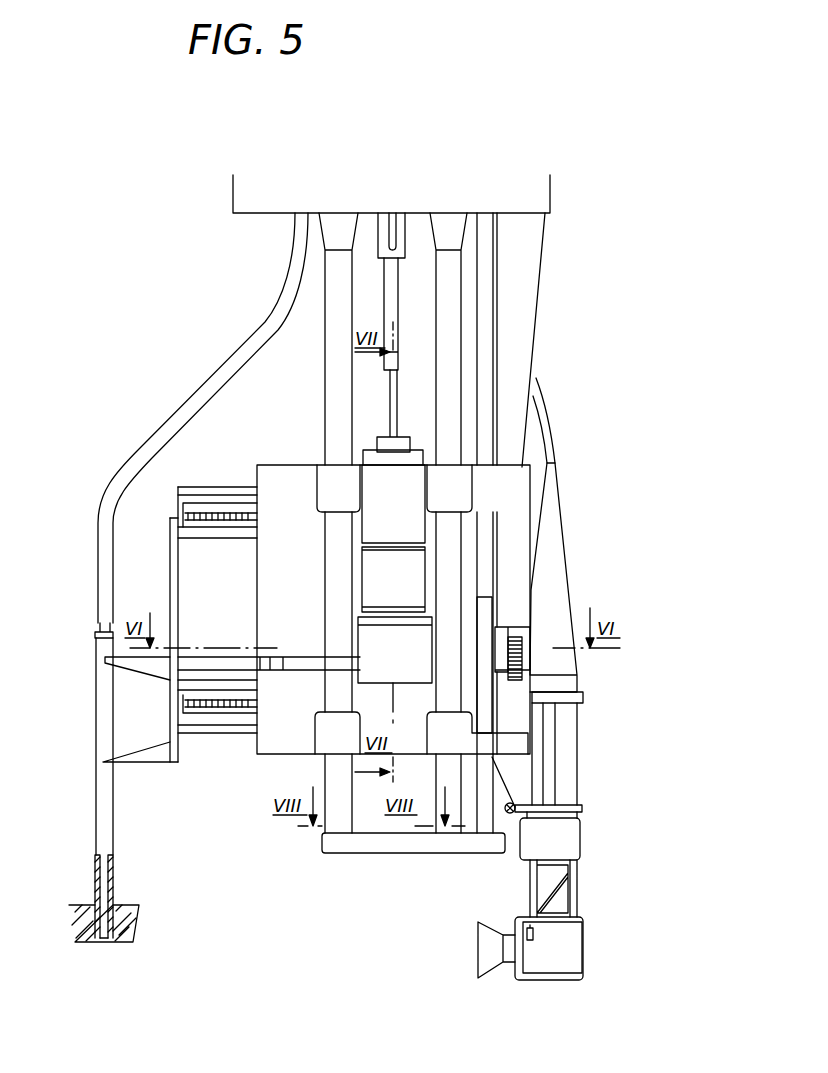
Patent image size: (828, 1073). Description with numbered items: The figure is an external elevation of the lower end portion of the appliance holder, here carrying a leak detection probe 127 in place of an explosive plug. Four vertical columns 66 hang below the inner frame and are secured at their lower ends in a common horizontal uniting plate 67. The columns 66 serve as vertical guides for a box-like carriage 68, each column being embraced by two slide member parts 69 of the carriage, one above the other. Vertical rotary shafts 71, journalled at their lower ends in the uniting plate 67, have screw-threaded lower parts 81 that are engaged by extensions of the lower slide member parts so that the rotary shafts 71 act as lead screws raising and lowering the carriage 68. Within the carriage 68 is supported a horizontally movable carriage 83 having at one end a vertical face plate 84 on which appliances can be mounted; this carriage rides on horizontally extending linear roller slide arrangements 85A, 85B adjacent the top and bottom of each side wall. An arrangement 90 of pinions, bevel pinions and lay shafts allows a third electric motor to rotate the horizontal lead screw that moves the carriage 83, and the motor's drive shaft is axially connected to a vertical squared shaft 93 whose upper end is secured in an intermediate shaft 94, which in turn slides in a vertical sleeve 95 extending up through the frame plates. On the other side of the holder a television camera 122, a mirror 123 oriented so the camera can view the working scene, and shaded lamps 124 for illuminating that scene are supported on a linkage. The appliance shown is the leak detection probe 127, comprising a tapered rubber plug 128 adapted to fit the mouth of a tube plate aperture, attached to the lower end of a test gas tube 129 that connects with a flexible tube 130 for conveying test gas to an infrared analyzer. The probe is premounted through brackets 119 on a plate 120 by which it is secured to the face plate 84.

The column 66 is at (337, 340).
The uniting plate 67 is at (377, 843).
The carriage 68 is at (272, 475).
The slide member part 69 is at (330, 492).
The rotary shaft 71 is at (487, 582).
The lower part of rotary shaft 81 is at (485, 615).
The horizontally movable carriage 83 is at (230, 532).
The face plate 84 is at (187, 563).
The upper linear roller slide arrangement 85A is at (202, 522).
The lower linear roller slide arrangement 85B is at (208, 708).
The arrangement of pinions, bevel pinions and lay shafts 90 is at (373, 562).
The vertical squared shaft 93 is at (392, 405).
The intermediate shaft 94 is at (390, 303).
The vertical sleeve 95 is at (398, 220).
The bracket 119 is at (157, 667).
The plate 120 is at (170, 608).
The television camera 122 is at (563, 755).
The mirror 123 is at (557, 893).
The shaded lamp 124 is at (487, 968).
The leak detection probe 127 is at (132, 897).
The tapered rubber plug 128 is at (137, 922).
The test gas tube 129 is at (107, 808).
The flexible tube 130 is at (190, 388).